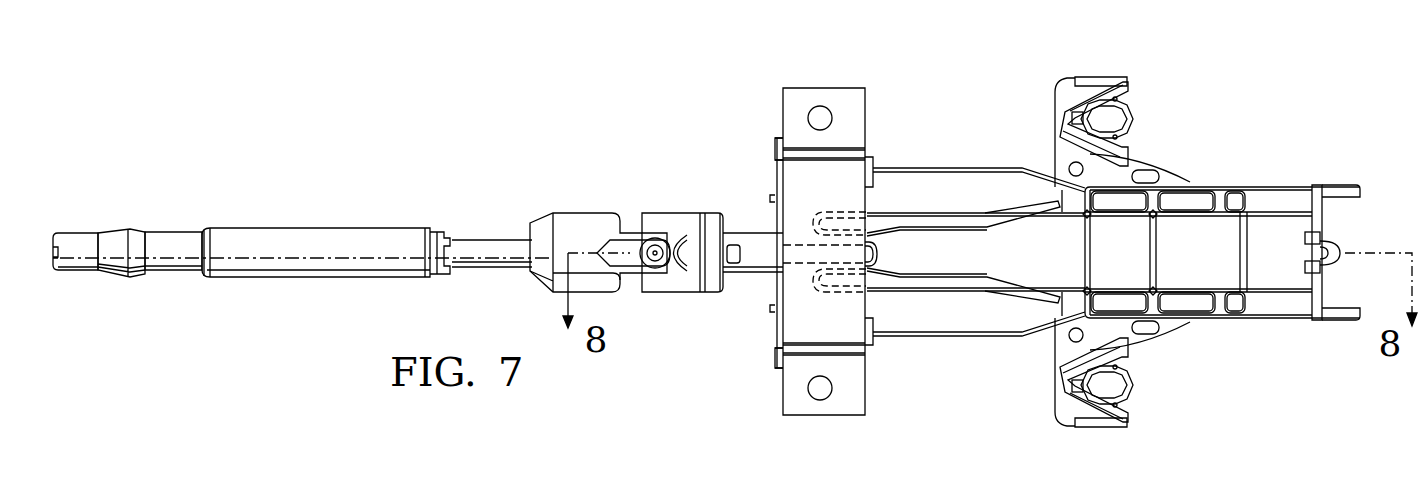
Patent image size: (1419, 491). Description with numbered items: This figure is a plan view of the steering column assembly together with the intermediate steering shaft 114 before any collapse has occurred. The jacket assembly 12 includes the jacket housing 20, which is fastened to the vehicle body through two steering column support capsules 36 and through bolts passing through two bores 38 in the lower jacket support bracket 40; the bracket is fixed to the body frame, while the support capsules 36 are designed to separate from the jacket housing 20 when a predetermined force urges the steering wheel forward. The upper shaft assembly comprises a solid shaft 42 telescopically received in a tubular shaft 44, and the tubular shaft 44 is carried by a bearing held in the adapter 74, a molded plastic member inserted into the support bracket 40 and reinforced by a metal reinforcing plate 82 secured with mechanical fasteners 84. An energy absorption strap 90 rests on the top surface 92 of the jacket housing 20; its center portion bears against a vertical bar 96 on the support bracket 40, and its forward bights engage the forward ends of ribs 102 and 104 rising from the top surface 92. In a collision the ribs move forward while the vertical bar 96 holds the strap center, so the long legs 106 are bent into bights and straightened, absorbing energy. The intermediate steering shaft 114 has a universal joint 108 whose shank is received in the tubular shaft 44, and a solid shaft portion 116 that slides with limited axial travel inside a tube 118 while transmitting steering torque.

The jacket assembly 12 is at (1265, 187).
The jacket housing 20 is at (915, 167).
The steering column support capsules 36 is at (1133, 120).
The bores 38 is at (810, 114).
The lower jacket support bracket 40 is at (866, 103).
The solid shaft 42 is at (1340, 252).
The tubular shaft 44 is at (748, 270).
The adapter 74 is at (872, 158).
The metal reinforcing plate 82 is at (776, 160).
The mechanical fasteners 84 is at (771, 357).
The energy absorption strap 90 is at (940, 213).
The top surface 92 is at (968, 318).
The vertical bar 96 is at (806, 243).
The rib 102 is at (1073, 293).
The rib 104 is at (1066, 188).
The long legs 106 is at (970, 213).
The universal joint 108 is at (660, 213).
The intermediate steering shaft 114 is at (453, 192).
The solid shaft portion 116 is at (486, 258).
The tube 118 is at (325, 232).